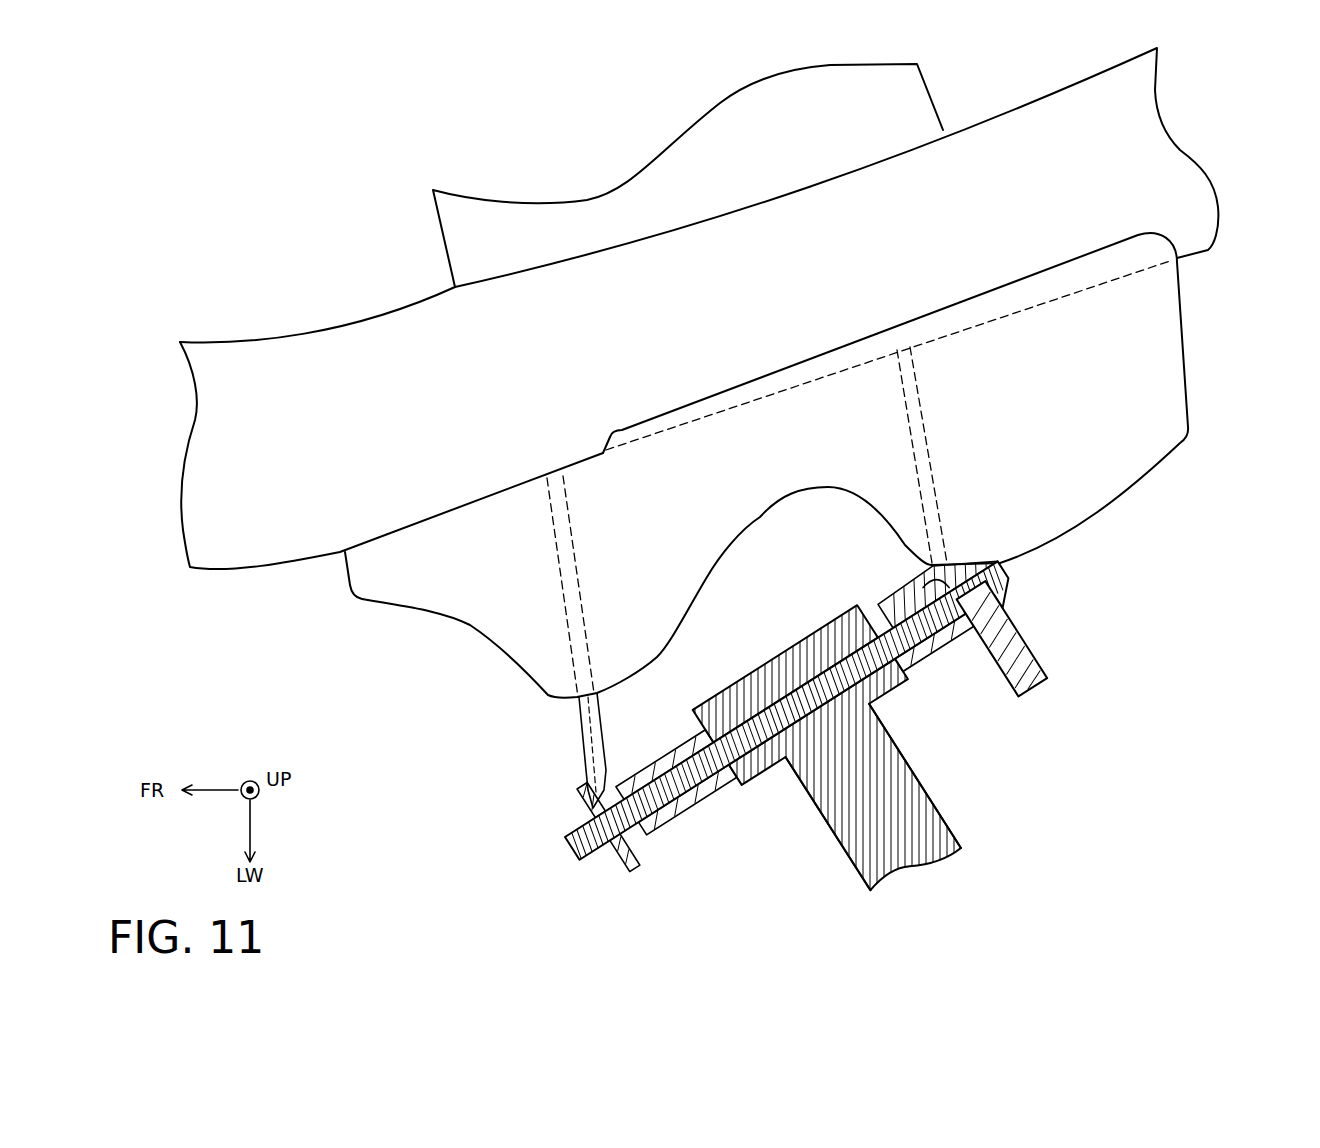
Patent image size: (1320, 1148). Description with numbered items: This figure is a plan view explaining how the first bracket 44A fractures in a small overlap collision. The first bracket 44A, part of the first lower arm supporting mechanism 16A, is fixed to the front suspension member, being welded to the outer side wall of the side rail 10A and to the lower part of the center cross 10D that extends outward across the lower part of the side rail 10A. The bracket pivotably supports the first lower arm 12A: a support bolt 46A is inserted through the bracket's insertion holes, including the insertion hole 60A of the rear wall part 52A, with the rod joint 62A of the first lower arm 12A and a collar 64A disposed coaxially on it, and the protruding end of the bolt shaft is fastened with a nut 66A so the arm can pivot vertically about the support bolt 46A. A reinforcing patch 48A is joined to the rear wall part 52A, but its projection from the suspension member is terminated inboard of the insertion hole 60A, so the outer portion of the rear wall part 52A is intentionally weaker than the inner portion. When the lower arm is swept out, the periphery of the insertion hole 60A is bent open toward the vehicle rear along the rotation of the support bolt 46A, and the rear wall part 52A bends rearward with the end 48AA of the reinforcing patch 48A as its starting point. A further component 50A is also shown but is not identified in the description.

The side rail 10A is at (340, 347).
The center cross 10D is at (500, 240).
The first lower arm 12A is at (858, 833).
The first lower arm supporting mechanism 16A is at (487, 711).
The first bracket 44A is at (507, 750).
The support bolt 46A is at (790, 670).
The reinforcing patch 48A is at (1147, 397).
The end of the reinforcing patch 48AA is at (993, 563).
The bolt 50A is at (583, 716).
The rear wall part 52A is at (1007, 617).
The insertion hole 60A is at (937, 600).
The rod joint 62A is at (752, 755).
The collar 64A is at (880, 606).
The nut 66A is at (603, 858).